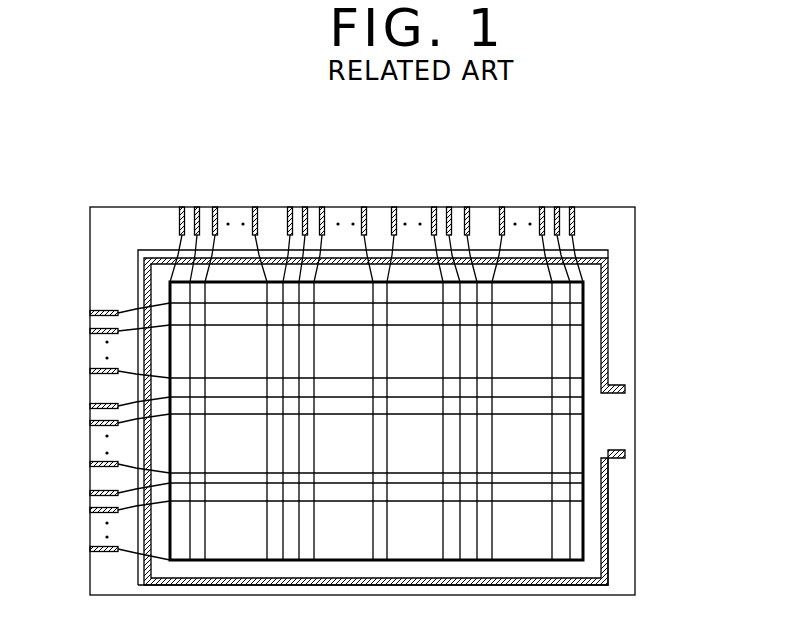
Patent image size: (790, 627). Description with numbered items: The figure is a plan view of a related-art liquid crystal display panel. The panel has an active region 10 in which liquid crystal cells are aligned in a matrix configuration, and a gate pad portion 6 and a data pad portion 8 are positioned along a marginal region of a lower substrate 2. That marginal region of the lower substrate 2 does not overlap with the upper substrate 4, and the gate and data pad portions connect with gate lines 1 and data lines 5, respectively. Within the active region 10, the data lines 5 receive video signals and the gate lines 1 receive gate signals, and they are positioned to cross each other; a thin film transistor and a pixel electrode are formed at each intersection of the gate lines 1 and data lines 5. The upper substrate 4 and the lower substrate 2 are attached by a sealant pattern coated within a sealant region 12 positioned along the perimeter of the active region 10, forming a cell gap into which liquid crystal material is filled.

The gate lines 1 is at (538, 470).
The lower substrate 2 is at (622, 228).
The upper substrate 4 is at (622, 313).
The data lines 5 is at (493, 437).
The gate pad portion 6 is at (78, 305).
The data pad portion 8 is at (185, 196).
The active region 10 is at (335, 373).
The sealant region 12 is at (603, 355).